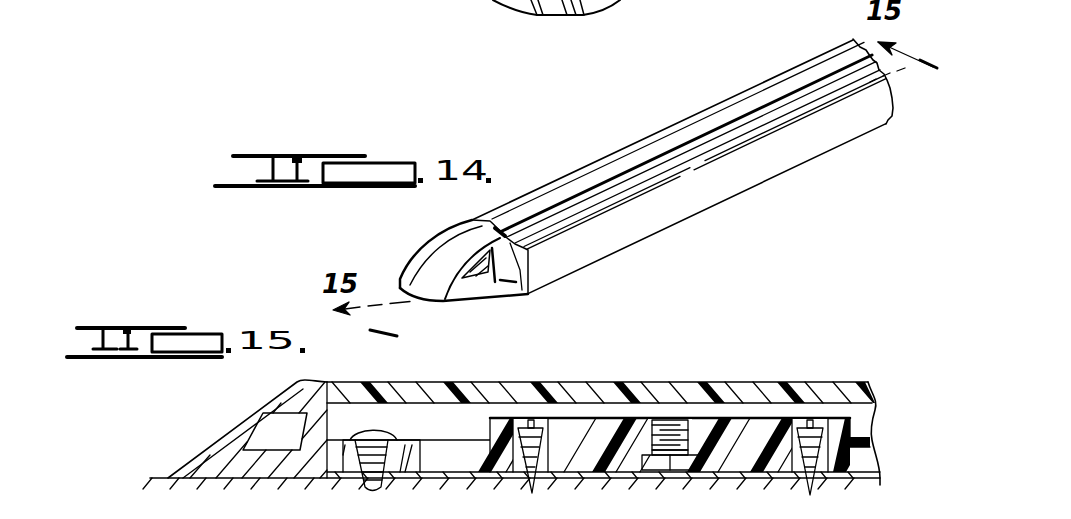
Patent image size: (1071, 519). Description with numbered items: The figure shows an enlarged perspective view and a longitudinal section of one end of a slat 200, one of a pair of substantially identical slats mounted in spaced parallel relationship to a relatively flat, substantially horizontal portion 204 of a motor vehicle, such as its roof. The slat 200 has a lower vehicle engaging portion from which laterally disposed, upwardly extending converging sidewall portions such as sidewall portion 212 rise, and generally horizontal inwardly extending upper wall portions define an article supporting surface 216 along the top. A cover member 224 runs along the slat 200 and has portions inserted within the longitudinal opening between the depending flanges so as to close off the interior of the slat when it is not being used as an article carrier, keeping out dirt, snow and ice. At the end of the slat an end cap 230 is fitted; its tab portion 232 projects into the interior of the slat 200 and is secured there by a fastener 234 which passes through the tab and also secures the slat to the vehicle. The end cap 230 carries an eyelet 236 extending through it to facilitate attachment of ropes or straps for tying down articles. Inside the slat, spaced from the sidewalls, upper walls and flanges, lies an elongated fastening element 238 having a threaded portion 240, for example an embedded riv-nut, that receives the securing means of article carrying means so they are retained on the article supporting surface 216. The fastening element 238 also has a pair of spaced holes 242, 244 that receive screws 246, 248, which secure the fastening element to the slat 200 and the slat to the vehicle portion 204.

In FIG. 14, the slat 200 is at (790, 172).
In FIG. 15, the slat 200 is at (762, 383).
In FIG. 15, the portion of a motor vehicle 204 is at (152, 478).
In FIG. 14, the sidewall portion 212 is at (682, 200).
In FIG. 14, the article supporting surface 216 is at (622, 198).
In FIG. 14, the cover member 224 is at (637, 157).
In FIG. 15, the cover member 224 is at (793, 390).
In FIG. 14, the end cap 230 is at (497, 287).
In FIG. 15, the end cap 230 is at (224, 433).
In FIG. 15, the tab portion 232 is at (348, 475).
In FIG. 15, the fastener 234 is at (373, 431).
In FIG. 14, the eyelet 236 is at (477, 277).
In FIG. 15, the eyelet 236 is at (270, 426).
In FIG. 15, the fastening element 238 is at (602, 432).
In FIG. 15, the threaded portion 240 is at (673, 420).
In FIG. 15, the hole 242 is at (541, 478).
In FIG. 15, the hole 244 is at (813, 455).
In FIG. 15, the screw 246 is at (537, 425).
In FIG. 15, the screw 248 is at (817, 427).